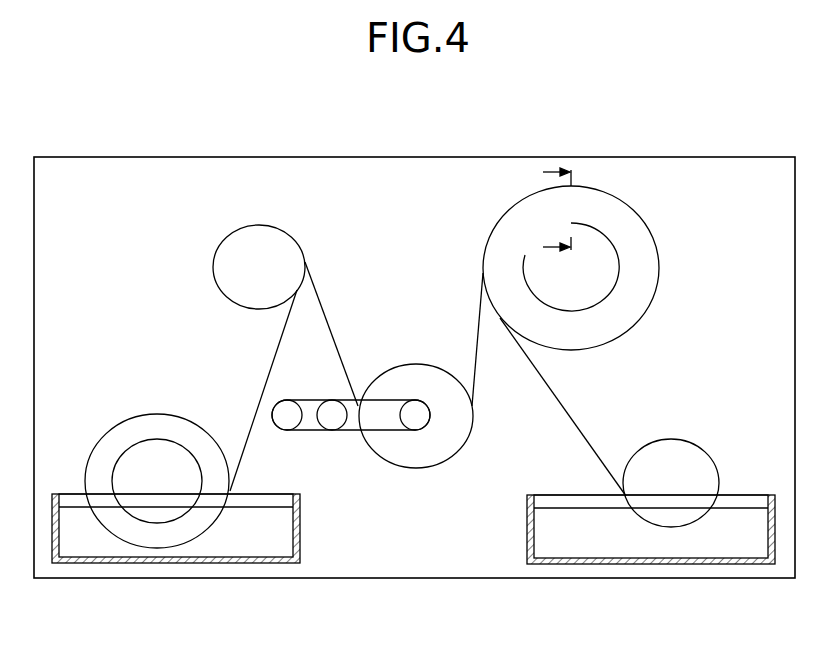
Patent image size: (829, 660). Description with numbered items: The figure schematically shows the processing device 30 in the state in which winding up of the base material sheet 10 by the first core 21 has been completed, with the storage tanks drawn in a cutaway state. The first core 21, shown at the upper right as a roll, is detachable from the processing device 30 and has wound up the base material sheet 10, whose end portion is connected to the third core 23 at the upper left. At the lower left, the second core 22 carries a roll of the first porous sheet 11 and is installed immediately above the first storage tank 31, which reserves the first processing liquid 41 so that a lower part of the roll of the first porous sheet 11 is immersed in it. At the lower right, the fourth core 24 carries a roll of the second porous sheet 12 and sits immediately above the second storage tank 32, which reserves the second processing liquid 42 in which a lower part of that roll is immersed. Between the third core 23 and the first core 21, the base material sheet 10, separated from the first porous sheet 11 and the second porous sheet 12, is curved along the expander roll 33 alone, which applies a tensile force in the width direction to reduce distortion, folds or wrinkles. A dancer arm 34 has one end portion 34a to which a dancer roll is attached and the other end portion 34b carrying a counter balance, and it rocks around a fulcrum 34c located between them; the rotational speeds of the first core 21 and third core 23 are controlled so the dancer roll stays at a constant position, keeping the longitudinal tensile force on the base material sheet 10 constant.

The processing device 30 is at (162, 157).
The third core 23 is at (241, 244).
The first porous sheet 11 is at (272, 362).
The base material sheet 10 is at (476, 367).
The second porous sheet 12 is at (578, 430).
The expander roll 33 is at (422, 375).
The dancer arm 34 is at (388, 398).
The one end portion 34a is at (415, 420).
The other end portion 34b is at (287, 420).
The fulcrum 34c is at (332, 420).
The first core 21 is at (590, 277).
The second core 22 is at (134, 497).
The first storage tank 31 is at (170, 562).
The first processing liquid 41 is at (240, 533).
The fourth core 24 is at (648, 497).
The second storage tank 32 is at (680, 563).
The second processing liquid 42 is at (727, 535).